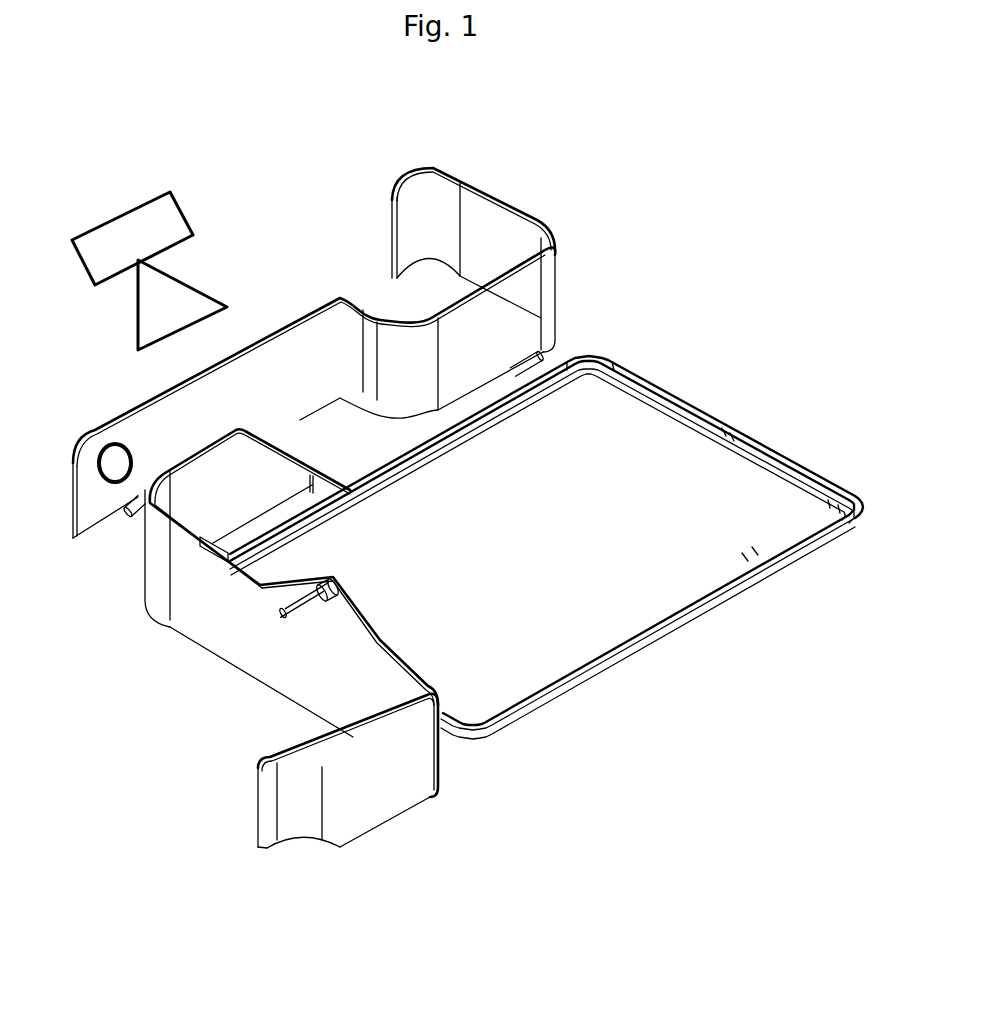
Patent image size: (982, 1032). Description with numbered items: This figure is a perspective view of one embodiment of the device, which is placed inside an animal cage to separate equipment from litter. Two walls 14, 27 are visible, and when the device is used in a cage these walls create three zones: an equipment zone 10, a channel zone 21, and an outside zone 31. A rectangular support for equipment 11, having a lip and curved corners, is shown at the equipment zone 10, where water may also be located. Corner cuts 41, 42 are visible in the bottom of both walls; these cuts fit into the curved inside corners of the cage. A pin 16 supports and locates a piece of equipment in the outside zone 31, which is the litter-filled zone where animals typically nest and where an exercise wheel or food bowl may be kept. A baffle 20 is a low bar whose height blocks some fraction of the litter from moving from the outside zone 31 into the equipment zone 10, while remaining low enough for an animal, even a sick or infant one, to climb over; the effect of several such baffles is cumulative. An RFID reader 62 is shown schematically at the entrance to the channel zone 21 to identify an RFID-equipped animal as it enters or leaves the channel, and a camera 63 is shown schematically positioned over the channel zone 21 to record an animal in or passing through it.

The equipment zone 10 is at (546, 546).
The rectangular support for equipment 11 is at (695, 400).
The outside zone 31 is at (314, 521).
The wall 27 is at (473, 239).
The corner cut 41 is at (433, 256).
The channel zone 21 is at (287, 433).
The wall 14 is at (332, 805).
The corner cut 42 is at (302, 840).
The pin 16 is at (310, 600).
The baffle 20 is at (135, 510).
The RFID reader 62 is at (112, 458).
The camera 63 is at (160, 222).